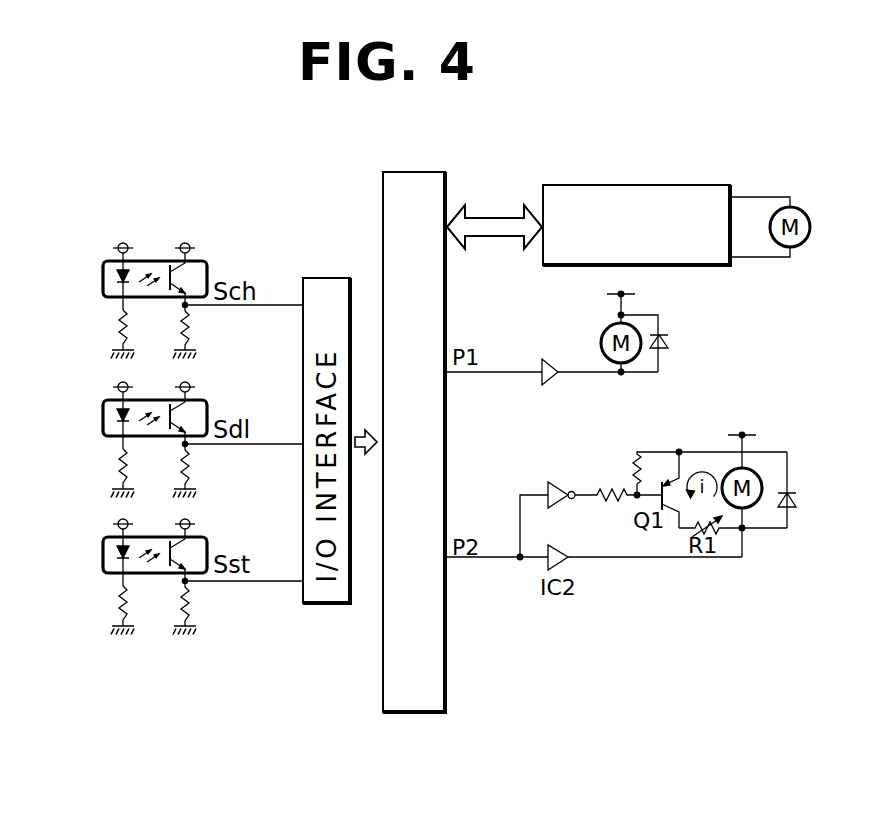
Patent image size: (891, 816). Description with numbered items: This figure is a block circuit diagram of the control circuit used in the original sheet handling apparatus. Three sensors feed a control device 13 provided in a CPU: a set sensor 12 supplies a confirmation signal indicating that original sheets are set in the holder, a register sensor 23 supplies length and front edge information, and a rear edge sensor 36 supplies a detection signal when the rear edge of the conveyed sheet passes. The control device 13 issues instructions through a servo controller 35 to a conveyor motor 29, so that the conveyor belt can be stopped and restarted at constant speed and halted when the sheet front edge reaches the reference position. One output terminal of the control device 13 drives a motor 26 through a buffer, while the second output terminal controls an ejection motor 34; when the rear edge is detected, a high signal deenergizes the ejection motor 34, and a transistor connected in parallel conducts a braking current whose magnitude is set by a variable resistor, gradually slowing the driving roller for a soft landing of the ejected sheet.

The set sensor 12 is at (105, 263).
The register sensor 23 is at (105, 402).
The sensor 36 is at (105, 541).
The control device 13 is at (383, 200).
The servo controller 35 is at (628, 185).
The conveyor motor 29 is at (805, 213).
The drive motor 26 is at (604, 334).
The ejection motor 34 is at (762, 479).